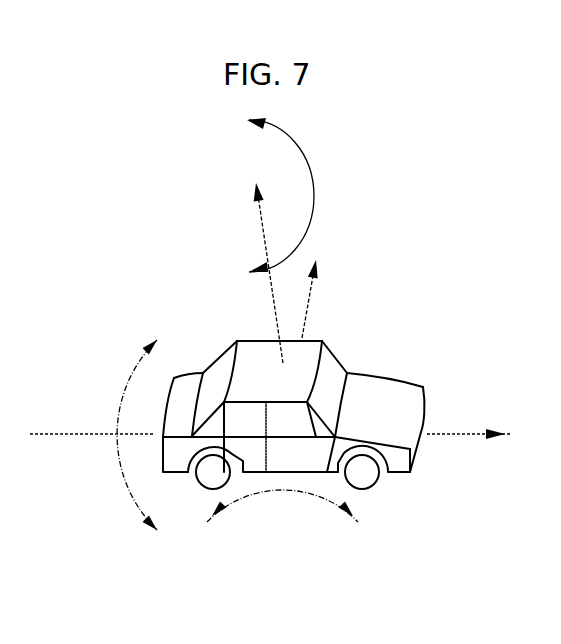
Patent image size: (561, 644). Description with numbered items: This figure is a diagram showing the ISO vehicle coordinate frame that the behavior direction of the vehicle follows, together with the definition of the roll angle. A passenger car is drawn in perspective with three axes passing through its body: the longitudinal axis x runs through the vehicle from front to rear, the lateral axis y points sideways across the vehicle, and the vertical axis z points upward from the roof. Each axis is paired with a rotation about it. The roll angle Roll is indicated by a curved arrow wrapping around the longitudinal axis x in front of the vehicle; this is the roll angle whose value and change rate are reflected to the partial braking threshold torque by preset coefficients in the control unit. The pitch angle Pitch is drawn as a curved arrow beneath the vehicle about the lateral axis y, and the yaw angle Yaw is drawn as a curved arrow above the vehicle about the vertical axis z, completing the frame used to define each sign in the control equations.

The x axis x is at (270, 420).
The y axis y is at (321, 295).
The z axis z is at (268, 271).
The roll angle Roll is at (122, 420).
The pitch angle Pitch is at (290, 455).
The yaw angle Yaw is at (305, 195).